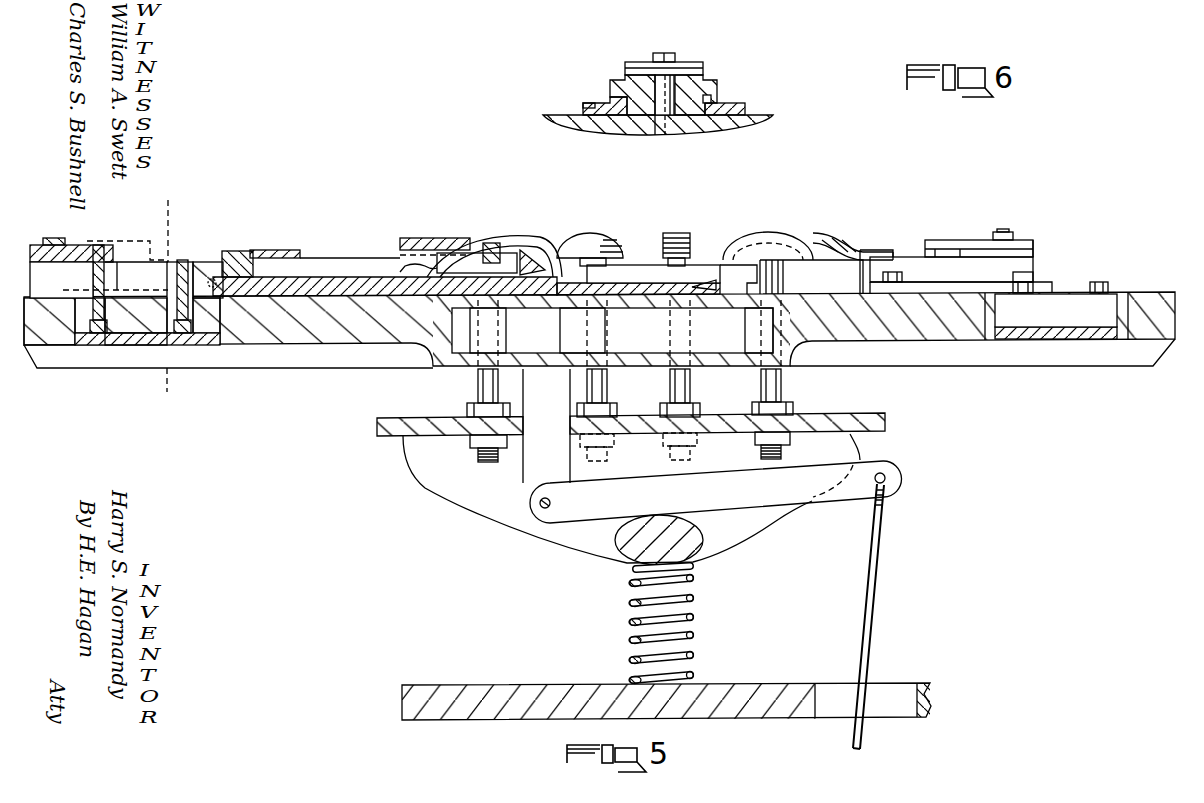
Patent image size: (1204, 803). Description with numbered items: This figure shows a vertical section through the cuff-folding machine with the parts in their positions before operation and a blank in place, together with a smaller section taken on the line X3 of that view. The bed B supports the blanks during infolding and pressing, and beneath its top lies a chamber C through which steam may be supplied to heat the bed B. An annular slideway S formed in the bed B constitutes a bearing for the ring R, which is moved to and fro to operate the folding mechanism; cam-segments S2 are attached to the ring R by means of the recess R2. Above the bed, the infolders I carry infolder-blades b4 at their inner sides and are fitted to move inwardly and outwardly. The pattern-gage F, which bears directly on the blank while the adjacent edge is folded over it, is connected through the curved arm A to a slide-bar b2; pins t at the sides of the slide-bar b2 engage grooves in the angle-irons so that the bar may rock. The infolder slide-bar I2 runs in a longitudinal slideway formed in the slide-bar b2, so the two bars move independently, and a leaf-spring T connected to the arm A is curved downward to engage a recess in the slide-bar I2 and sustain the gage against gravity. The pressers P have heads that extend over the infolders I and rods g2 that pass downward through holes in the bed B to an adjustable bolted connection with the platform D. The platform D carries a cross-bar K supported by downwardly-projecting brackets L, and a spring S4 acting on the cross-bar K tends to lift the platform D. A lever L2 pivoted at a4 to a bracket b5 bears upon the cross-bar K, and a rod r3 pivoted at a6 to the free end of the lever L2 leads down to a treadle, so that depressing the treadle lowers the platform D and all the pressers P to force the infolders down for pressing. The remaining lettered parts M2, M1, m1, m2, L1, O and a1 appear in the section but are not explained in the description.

In FIG. 5, the bed B is at (599, 330).
In FIG. 6, the bed B is at (727, 125).
In FIG. 5, the annular slideway S is at (129, 303).
In FIG. 5, the cam-segments S2 is at (136, 315).
In FIG. 5, the ring R is at (60, 352).
In FIG. 5, the recess R2 is at (145, 345).
In FIG. 5, the clamping bolt M2 is at (103, 345).
In FIG. 6, the clamping bolt M2 is at (658, 118).
In FIG. 5, the clamping bolt M1 is at (184, 345).
In FIG. 5, the slide-bar b2 is at (75, 245).
In FIG. 6, the slide-bar b2 is at (720, 72).
In FIG. 5, the nut plate m1 is at (93, 270).
In FIG. 6, the nut plate m1 is at (664, 53).
In FIG. 5, the plate m2 is at (180, 280).
In FIG. 5, the section line X3 is at (126, 289).
In FIG. 5, the curved arm A is at (416, 237).
In FIG. 5, the lug L1 is at (343, 271).
In FIG. 5, the pattern-gage F is at (507, 262).
In FIG. 5, the pressers P is at (606, 236).
In FIG. 5, the chamber C is at (612, 330).
In FIG. 5, the infolder-blades b4 is at (757, 297).
In FIG. 5, the opening O is at (480, 347).
In FIG. 5, the infolders I is at (667, 288).
In FIG. 5, the presser rods g2 is at (542, 250).
In FIG. 5, the platform D is at (631, 437).
In FIG. 5, the bracket b5 is at (546, 426).
In FIG. 5, the cross-bar K is at (631, 498).
In FIG. 5, the lever L2 is at (716, 492).
In FIG. 5, the lever pivot a4 is at (552, 504).
In FIG. 5, the rod pivot a6 is at (887, 478).
In FIG. 5, the rod r3 is at (884, 544).
In FIG. 5, the brackets L is at (671, 540).
In FIG. 5, the spring S4 is at (698, 598).
In FIG. 5, the leaf-spring T is at (752, 680).
In FIG. 6, the clamp jaw a1 is at (617, 87).
In FIG. 6, the pins t is at (573, 108).
In FIG. 6, the infolder slide-bar I2 is at (680, 83).